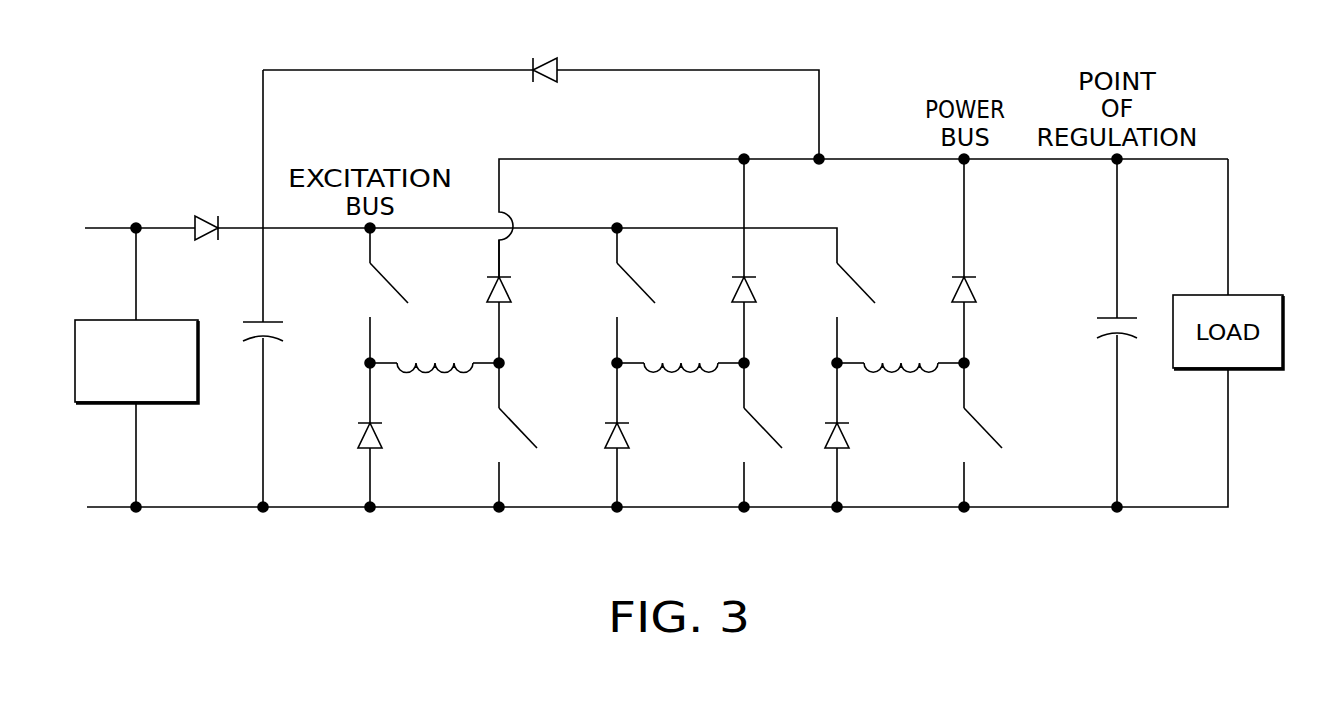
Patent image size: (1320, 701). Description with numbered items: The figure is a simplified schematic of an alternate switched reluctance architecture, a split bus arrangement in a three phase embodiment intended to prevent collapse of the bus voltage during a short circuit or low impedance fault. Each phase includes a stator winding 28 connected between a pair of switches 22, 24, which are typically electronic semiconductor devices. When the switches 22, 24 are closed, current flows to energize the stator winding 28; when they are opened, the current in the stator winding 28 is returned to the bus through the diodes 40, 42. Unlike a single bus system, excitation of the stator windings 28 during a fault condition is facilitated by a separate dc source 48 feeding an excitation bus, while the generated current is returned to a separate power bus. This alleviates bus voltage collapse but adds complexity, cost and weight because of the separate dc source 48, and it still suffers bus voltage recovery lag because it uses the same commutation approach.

The dc source 48 is at (157, 320).
The switch 22 is at (386, 282).
The diode 40 is at (508, 293).
The stator winding 28 is at (401, 372).
The switch 24 is at (518, 423).
The diode 42 is at (359, 427).